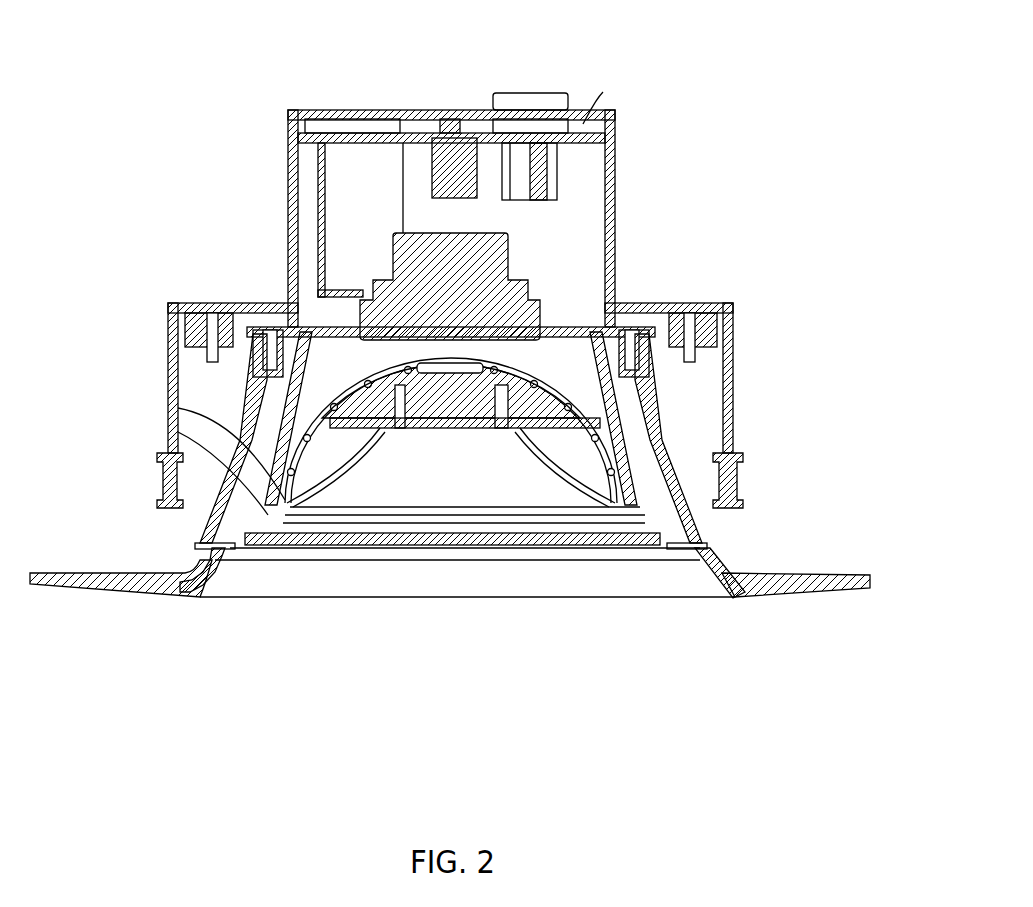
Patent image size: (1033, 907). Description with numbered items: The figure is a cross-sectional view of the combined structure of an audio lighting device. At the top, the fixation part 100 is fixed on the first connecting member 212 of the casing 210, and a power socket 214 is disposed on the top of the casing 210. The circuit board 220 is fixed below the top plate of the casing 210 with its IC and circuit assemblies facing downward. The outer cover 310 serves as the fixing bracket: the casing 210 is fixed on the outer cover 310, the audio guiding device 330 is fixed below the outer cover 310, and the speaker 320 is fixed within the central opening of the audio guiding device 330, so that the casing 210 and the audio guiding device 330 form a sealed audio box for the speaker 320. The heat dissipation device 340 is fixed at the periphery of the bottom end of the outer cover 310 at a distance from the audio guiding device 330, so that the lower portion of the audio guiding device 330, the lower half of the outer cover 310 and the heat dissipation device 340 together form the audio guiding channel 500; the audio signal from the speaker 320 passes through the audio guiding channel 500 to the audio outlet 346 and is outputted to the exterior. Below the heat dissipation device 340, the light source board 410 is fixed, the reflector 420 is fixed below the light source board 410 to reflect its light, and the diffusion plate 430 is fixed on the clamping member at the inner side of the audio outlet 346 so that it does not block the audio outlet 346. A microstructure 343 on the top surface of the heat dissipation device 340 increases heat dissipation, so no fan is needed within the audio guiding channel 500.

The fixation part 100 is at (524, 226).
The casing 210 is at (616, 210).
The first connecting member 212 is at (645, 300).
The power socket 214 is at (540, 93).
The circuit board 220 is at (603, 92).
The outer cover 310 is at (680, 492).
The speaker 320 is at (503, 253).
The audio guiding device 330 is at (650, 388).
The heat dissipation device 340 is at (737, 574).
The microstructure 343 is at (190, 436).
The audio outlet 346 is at (220, 560).
The light source board 410 is at (443, 430).
The reflector 420 is at (597, 447).
The diffusion plate 430 is at (505, 558).
The audio guiding channel 500 is at (283, 450).